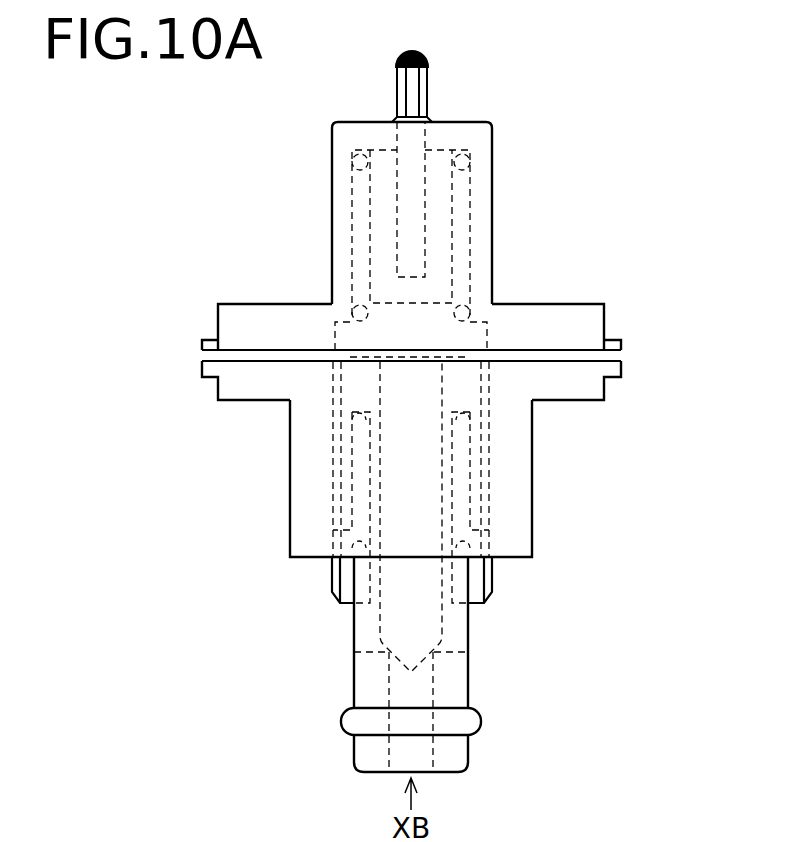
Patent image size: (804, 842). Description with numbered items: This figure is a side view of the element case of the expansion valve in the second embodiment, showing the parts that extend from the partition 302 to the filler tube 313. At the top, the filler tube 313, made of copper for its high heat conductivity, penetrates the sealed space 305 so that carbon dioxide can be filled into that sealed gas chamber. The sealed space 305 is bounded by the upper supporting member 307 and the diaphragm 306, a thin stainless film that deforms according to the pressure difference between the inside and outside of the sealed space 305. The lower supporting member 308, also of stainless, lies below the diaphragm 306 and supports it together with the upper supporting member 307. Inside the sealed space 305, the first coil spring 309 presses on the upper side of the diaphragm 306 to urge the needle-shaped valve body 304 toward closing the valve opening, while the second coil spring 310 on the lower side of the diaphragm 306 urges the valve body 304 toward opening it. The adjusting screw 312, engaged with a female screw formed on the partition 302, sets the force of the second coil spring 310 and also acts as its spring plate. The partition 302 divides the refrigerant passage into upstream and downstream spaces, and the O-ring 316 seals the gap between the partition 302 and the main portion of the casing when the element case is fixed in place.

The partition 302 is at (510, 515).
The valve body 304 is at (410, 623).
The sealed space 305 is at (437, 198).
The diaphragm 306 is at (612, 357).
The upper supporting member 307 is at (577, 323).
The lower supporting member 308 is at (577, 385).
The first coil spring 309 is at (460, 230).
The second coil spring 310 is at (462, 470).
The adjusting screw 312 is at (475, 587).
The filler tube 313 is at (428, 88).
The O-ring 316 is at (370, 723).